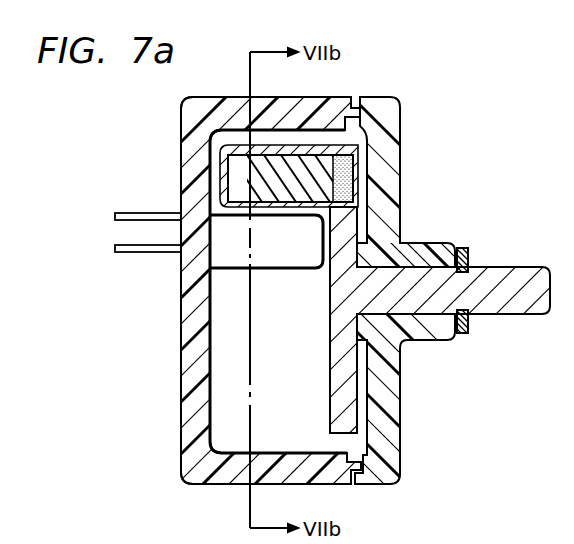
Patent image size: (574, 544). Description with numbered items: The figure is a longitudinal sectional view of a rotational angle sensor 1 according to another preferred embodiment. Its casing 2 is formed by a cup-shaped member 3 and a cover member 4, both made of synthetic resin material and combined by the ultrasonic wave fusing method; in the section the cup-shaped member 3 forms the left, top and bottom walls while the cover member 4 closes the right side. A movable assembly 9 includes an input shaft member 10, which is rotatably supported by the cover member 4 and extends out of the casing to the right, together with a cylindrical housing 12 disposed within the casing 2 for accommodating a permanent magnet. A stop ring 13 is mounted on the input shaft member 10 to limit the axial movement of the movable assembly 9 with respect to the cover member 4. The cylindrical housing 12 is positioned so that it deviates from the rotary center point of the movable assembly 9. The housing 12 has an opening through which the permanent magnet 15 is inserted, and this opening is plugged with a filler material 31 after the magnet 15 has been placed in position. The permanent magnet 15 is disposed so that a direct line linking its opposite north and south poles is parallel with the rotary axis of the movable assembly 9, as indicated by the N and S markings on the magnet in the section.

The rotational angle sensor 1 is at (400, 82).
The casing 2 is at (207, 94).
The cup-shaped member 3 is at (190, 122).
The cover member 4 is at (387, 186).
The movable assembly 9 is at (358, 395).
The input shaft member 10 is at (490, 308).
The cylindrical housing 12 is at (305, 148).
The stop ring 13 is at (467, 253).
The permanent magnet 15 is at (275, 163).
The filler material 31 is at (346, 168).